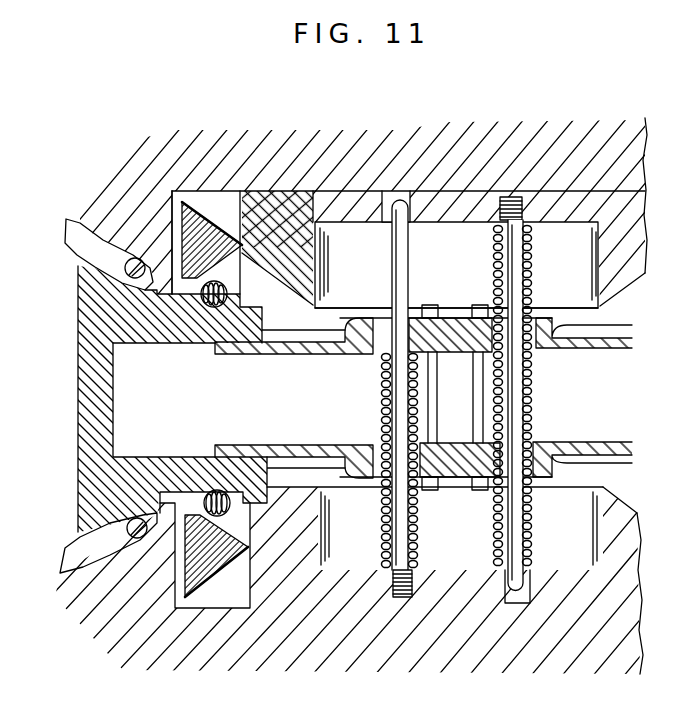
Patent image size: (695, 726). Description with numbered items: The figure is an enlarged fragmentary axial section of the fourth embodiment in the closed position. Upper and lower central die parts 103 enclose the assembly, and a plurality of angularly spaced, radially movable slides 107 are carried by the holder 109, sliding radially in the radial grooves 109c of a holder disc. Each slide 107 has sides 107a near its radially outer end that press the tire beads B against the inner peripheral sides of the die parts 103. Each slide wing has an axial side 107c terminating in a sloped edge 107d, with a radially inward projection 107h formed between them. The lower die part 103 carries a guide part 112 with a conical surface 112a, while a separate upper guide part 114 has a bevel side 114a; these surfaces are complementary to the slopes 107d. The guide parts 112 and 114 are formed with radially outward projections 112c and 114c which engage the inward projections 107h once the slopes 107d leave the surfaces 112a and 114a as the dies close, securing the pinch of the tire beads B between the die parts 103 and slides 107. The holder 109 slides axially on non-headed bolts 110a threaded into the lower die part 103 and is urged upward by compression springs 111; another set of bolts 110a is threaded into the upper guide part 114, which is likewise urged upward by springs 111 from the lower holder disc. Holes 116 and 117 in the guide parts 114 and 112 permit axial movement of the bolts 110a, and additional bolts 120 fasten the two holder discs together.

The central die parts 103 is at (160, 145).
The slides 107 is at (78, 382).
The sides of slide 107a is at (66, 239).
The axial side of wing 107c is at (291, 248).
The sloped edge 107d is at (199, 226).
The radially inward projection 107h is at (250, 246).
The holder 109 is at (636, 367).
The radial grooves 109c is at (338, 463).
The non-headed bolts 110a is at (393, 200).
The compression springs 111 is at (493, 263).
The guide part 112 is at (623, 517).
The conical surface 112a is at (268, 515).
The radially outward projection 112c is at (173, 608).
The upper guide part 114 is at (296, 268).
The bevel side 114a is at (275, 284).
The radially outward projection 114c is at (175, 228).
The holes 116 is at (403, 190).
The holes 117 is at (511, 592).
The additional bolts 120 is at (477, 372).
The tire beads B is at (83, 220).